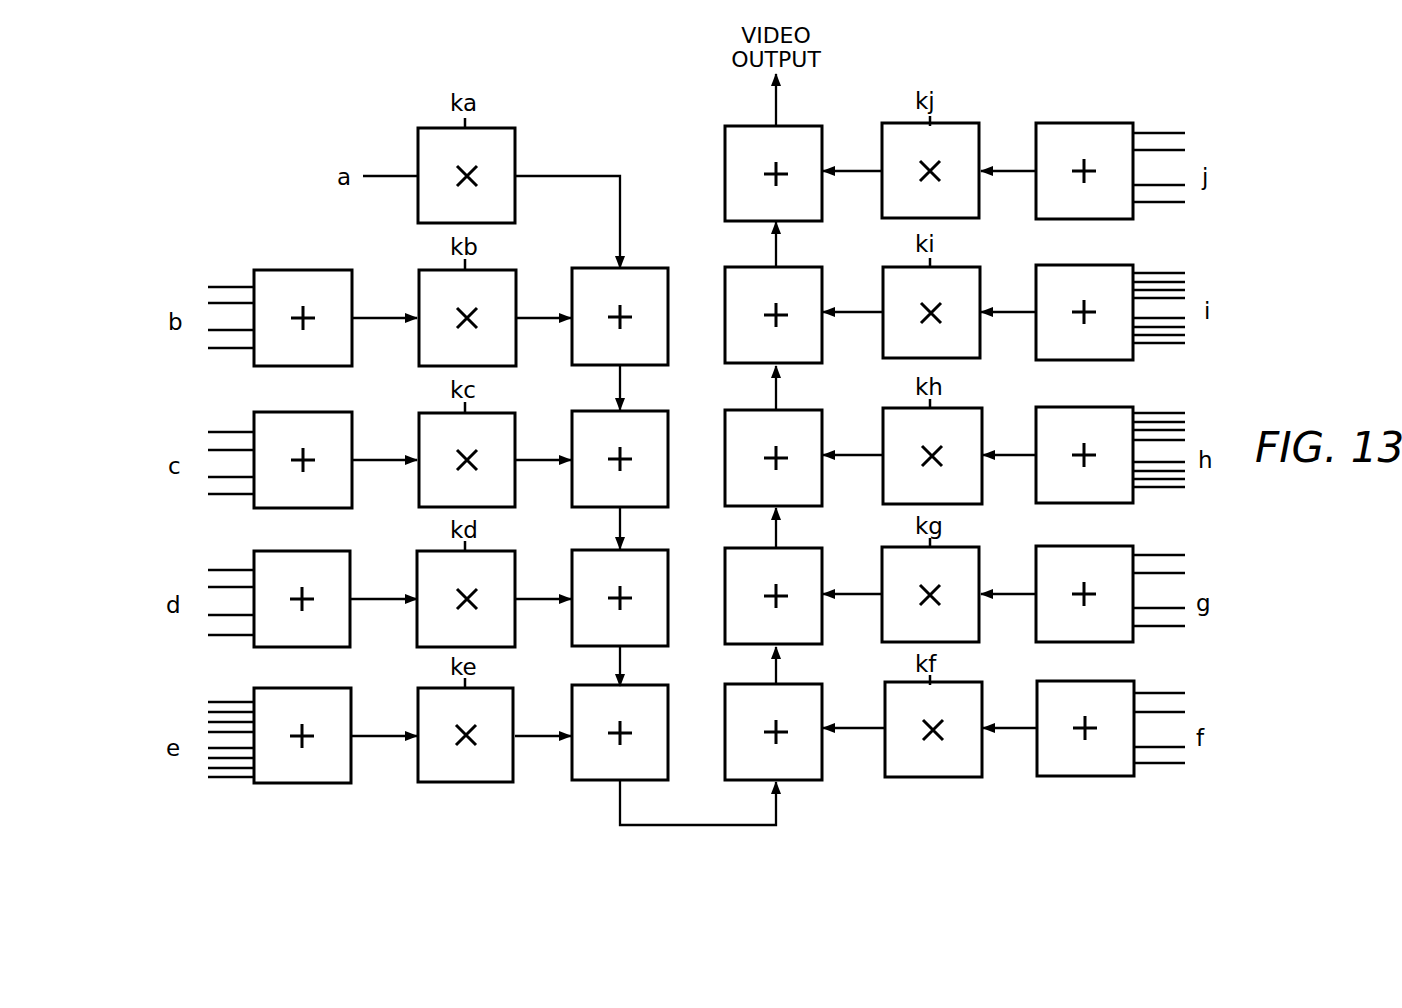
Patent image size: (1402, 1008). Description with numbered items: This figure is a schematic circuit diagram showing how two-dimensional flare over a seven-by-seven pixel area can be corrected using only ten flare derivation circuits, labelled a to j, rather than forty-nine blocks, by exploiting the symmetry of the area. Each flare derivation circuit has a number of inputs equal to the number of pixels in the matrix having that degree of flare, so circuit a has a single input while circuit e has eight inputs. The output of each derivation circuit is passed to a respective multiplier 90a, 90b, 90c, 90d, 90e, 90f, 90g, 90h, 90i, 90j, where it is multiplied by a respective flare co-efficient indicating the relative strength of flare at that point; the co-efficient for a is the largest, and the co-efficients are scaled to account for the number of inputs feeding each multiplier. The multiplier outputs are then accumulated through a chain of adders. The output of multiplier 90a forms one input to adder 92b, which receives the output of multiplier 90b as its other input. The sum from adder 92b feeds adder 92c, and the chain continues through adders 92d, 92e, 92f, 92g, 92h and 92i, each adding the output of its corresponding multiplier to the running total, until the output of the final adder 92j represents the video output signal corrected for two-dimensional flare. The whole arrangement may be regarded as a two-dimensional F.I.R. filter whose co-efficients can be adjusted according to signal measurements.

The multiplier 90a is at (418, 190).
The multiplier 90b is at (419, 334).
The multiplier 90c is at (419, 477).
The multiplier 90d is at (417, 617).
The multiplier 90e is at (418, 752).
The multiplier 90f is at (885, 750).
The multiplier 90g is at (882, 615).
The multiplier 90h is at (883, 475).
The multiplier 90i is at (883, 332).
The multiplier 90j is at (882, 190).
The adder 92b is at (572, 334).
The adder 92c is at (572, 477).
The adder 92d is at (572, 617).
The adder 92e is at (572, 752).
The adder 92f is at (725, 750).
The adder 92g is at (725, 615).
The adder 92h is at (725, 475).
The adder 92i is at (725, 332).
The adder 92j is at (725, 190).